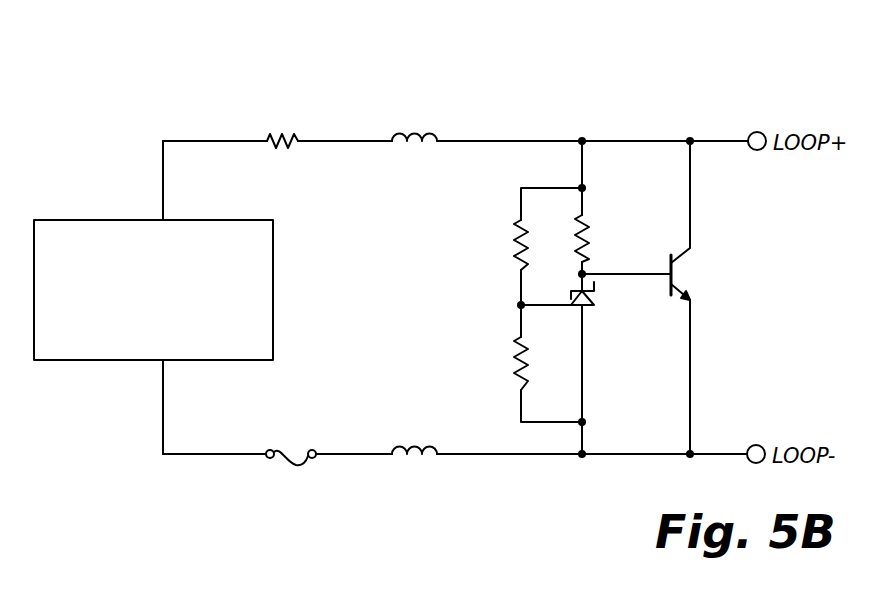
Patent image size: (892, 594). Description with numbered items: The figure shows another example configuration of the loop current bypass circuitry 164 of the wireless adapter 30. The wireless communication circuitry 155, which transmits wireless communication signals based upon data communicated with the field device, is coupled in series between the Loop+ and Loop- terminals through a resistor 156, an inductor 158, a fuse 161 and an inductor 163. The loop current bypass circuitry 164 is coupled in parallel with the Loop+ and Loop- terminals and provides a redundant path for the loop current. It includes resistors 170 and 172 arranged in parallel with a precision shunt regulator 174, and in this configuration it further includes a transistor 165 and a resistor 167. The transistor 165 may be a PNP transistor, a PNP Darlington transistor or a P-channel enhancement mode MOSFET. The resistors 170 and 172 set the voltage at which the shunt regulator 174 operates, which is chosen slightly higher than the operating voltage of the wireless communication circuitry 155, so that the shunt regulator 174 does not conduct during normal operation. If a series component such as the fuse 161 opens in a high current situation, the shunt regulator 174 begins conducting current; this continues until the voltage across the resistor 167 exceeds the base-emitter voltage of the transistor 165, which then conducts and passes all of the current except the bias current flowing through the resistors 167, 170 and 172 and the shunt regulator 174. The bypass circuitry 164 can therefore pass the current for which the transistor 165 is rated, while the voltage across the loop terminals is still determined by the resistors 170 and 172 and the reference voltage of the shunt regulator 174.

The wireless adapter 30 is at (549, 117).
The wireless communication circuitry 155 is at (273, 247).
The resistor 156 is at (280, 140).
The inductor 158 is at (420, 140).
The fuse 161 is at (284, 447).
The inductor 163 is at (407, 447).
The loop current bypass circuitry 164 is at (776, 258).
The transistor 165 is at (677, 277).
The resistor 167 is at (586, 240).
The resistor 170 is at (521, 242).
The resistor 172 is at (520, 356).
The shunt regulator 174 is at (588, 302).